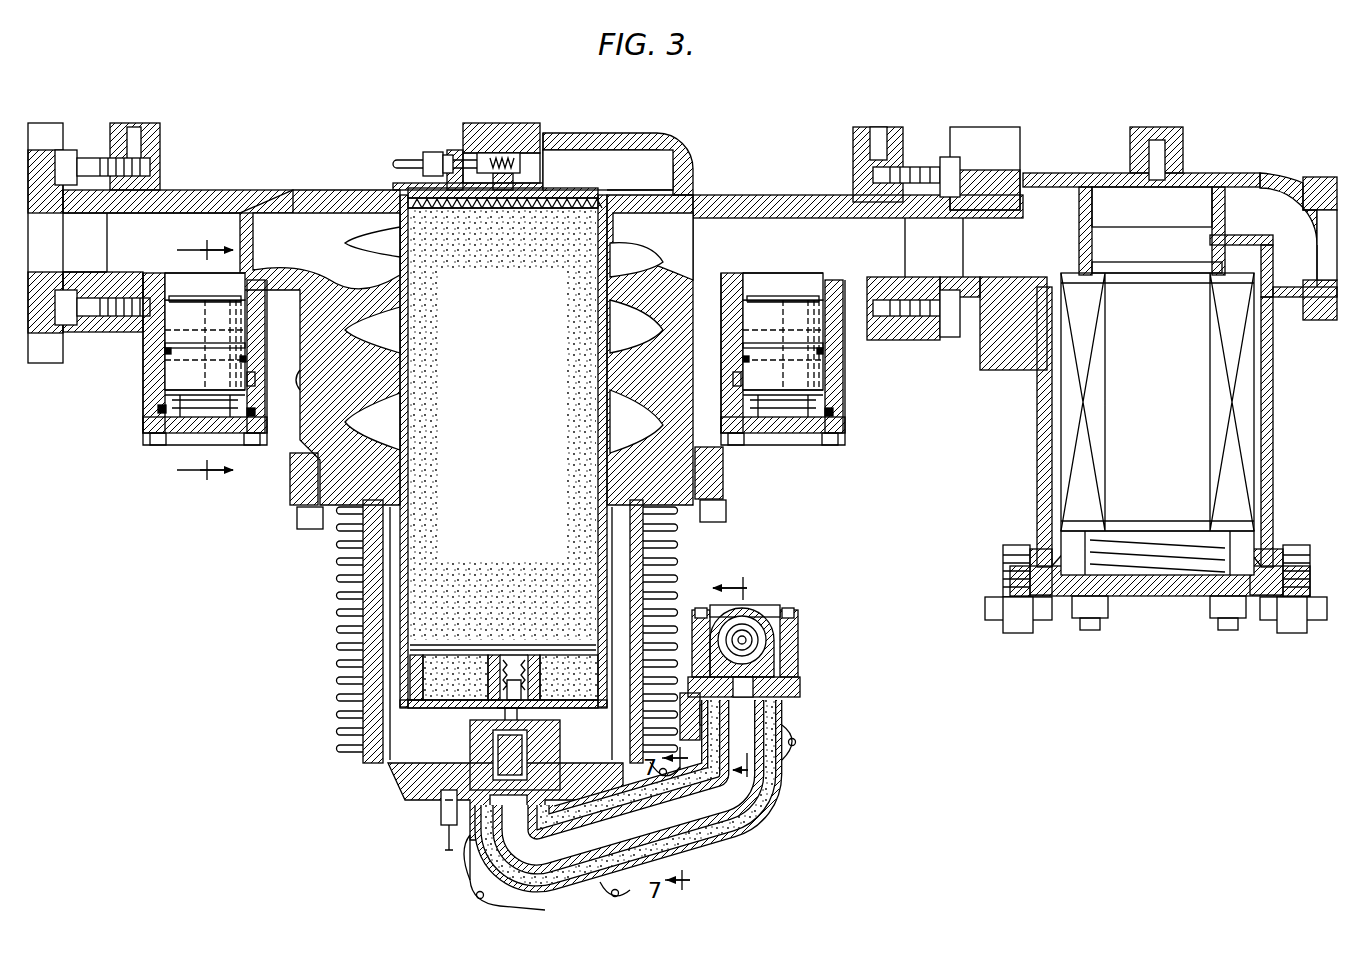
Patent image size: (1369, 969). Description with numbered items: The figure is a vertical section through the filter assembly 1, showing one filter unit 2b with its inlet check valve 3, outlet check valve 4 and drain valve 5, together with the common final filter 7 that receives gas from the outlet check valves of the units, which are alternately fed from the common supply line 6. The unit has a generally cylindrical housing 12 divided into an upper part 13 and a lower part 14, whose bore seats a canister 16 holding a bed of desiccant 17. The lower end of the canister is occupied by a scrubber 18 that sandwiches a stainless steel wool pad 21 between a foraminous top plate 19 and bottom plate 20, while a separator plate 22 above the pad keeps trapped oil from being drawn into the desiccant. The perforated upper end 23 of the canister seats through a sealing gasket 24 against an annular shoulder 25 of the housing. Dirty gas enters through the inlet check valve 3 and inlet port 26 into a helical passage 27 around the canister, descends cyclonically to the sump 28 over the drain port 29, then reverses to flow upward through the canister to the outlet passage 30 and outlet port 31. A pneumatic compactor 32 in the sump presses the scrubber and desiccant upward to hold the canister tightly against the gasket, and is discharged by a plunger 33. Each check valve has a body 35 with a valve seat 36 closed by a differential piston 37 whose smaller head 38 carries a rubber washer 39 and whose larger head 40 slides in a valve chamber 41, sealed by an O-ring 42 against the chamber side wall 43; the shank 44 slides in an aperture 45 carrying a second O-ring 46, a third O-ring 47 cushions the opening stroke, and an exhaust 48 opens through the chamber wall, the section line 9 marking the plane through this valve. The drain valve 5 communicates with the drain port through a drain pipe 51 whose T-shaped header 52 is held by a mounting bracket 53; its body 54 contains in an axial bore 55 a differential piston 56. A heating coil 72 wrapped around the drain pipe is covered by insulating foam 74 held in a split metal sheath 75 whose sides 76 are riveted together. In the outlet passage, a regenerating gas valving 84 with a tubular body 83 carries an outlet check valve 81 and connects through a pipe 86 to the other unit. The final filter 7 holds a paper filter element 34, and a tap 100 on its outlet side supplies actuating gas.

The filter assembly 1 is at (690, 152).
The filter unit 2b is at (323, 193).
The inlet check valve 3 is at (140, 396).
The outlet check valve 4 is at (848, 392).
The drain valve 5 is at (770, 634).
The common supply line 6 is at (731, 680).
The common filter 7 is at (1159, 380).
The section line 9- 9 is at (208, 358).
The housing 12 is at (306, 438).
The upper part 13 is at (312, 384).
The lower part 14 is at (338, 622).
The canister 16 is at (408, 410).
The desiccant bed 17 is at (500, 383).
The scrubber 18 is at (412, 697).
The top plate 19 is at (568, 660).
The bottom plate 20 is at (558, 704).
The annular pad 21 is at (452, 680).
The separator plate 22 is at (547, 645).
The upper end 23 is at (555, 198).
The sealing gasket 24 is at (600, 205).
The annular shoulder 25 is at (600, 190).
The inlet port 26 is at (339, 257).
The helical passage 27 is at (383, 335).
The sump 28 is at (618, 753).
The drain port 29 is at (496, 826).
The outlet passage 30 is at (650, 171).
The outlet port 31 is at (686, 254).
The pneumatic compactor 32 is at (470, 740).
The plunger 33 is at (445, 848).
The paper filter element 34 is at (1062, 428).
The valve body 35 is at (257, 416).
The valve seat 36 is at (190, 270).
The differential piston 37 is at (250, 360).
The smaller head 38 is at (242, 300).
The washer 39 is at (240, 300).
The larger head 40 is at (195, 420).
The valve chamber 41 is at (252, 395).
The O-ring 42 is at (160, 410).
The side wall 43 is at (150, 378).
The shank 44 is at (189, 335).
The aperture 45 is at (250, 345).
The second O-ring 46 is at (165, 350).
The third O-ring 47 is at (150, 442).
The exhaust 48 is at (257, 378).
The drain pipe 51 is at (617, 813).
The T-shaped header 52 is at (802, 690).
The mounting bracket 53 is at (682, 740).
The drain valve body 54 is at (800, 656).
The axial bore 55 is at (745, 622).
The differential piston 56 is at (758, 630).
The heating coil 72 is at (520, 905).
The heat-insulating foam 74 is at (745, 832).
The protective sheath 75 is at (783, 795).
The sheath sides 76 is at (468, 885).
The outlet check valve 81 is at (475, 154).
The tubular body 83 is at (489, 175).
The regenerating gas valving 84 is at (517, 184).
The pipe 86 is at (403, 155).
The tap 100 is at (1238, 178).